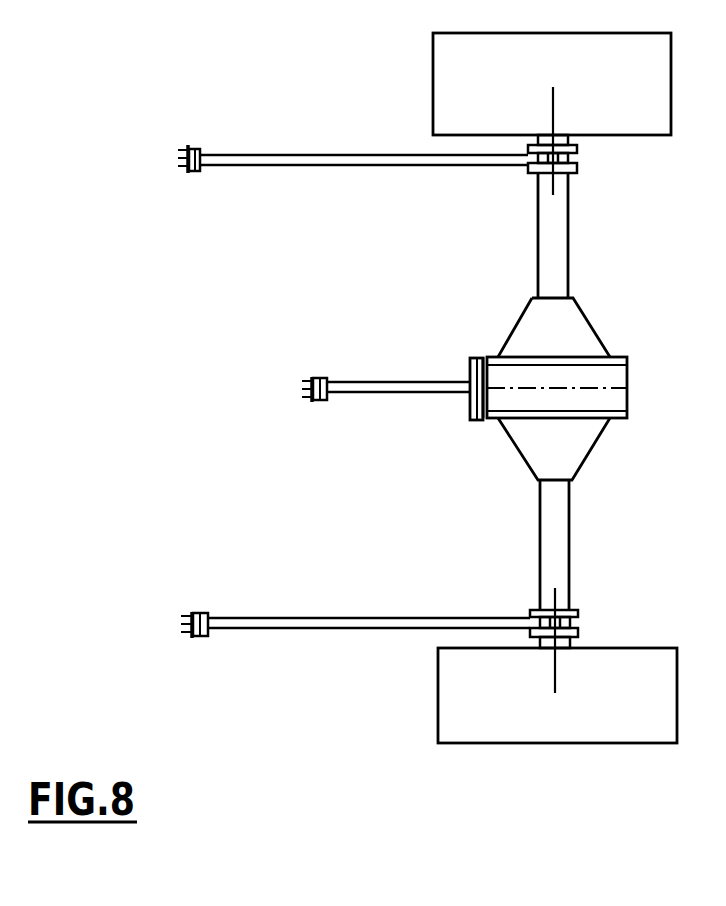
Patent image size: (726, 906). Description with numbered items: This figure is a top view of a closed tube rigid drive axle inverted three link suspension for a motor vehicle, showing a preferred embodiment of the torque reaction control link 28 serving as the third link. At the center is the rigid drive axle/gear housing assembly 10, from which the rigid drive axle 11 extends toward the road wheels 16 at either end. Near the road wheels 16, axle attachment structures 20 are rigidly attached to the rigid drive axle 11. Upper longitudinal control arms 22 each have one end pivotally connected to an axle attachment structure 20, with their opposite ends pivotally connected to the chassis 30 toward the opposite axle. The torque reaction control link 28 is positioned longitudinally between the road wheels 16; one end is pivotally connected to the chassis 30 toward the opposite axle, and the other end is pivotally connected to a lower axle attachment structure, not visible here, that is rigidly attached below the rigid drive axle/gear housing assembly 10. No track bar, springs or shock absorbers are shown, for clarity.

The rigid drive axle/gear housing assembly 10 is at (627, 387).
The rigid drive axle 11 is at (568, 247).
The road wheels 16 is at (432, 78).
The axle attachment structures 20 is at (568, 178).
The upper longitudinal control arms 22 is at (383, 167).
The torque reaction control link 28 is at (413, 388).
The chassis 30 is at (197, 168).